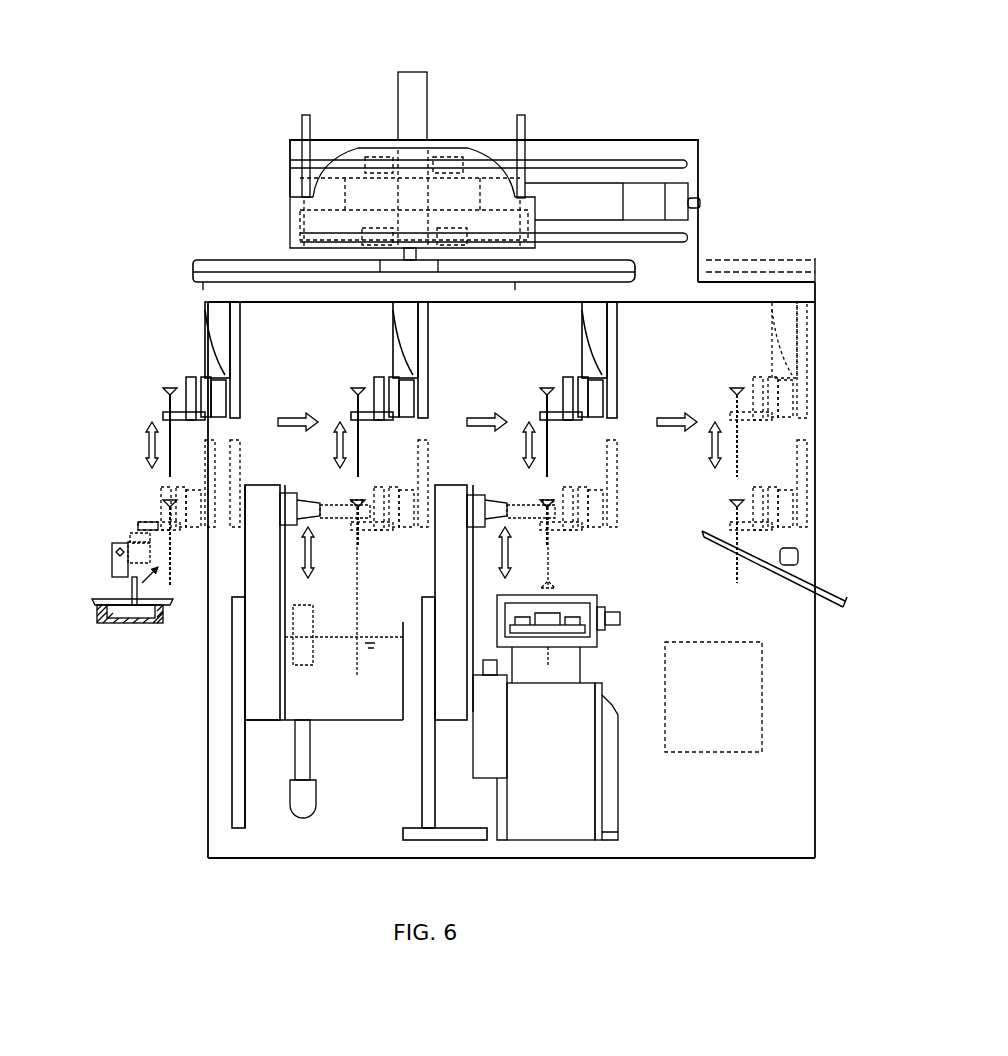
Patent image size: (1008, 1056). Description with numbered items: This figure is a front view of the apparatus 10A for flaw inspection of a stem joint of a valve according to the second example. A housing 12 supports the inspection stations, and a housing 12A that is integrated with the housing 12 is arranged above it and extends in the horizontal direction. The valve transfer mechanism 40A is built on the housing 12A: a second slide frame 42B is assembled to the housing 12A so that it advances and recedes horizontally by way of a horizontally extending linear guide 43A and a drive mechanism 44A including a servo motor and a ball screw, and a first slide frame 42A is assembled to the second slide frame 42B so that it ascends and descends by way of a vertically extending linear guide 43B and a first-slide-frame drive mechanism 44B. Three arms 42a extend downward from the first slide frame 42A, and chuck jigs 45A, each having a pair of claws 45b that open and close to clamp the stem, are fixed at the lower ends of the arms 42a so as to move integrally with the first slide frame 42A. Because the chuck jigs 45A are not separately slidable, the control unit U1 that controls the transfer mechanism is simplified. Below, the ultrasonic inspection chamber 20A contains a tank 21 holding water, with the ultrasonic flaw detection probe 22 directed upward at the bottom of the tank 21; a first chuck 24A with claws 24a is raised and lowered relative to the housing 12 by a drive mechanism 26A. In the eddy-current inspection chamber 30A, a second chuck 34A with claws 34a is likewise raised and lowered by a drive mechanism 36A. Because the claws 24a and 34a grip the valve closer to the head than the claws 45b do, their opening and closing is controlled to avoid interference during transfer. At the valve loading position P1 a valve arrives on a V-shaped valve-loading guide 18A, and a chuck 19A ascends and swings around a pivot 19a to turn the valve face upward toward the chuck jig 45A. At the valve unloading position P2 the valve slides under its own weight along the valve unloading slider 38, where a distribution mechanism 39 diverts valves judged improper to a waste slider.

The apparatus for flaw inspection 10A is at (208, 71).
The housing 12 is at (820, 328).
The housing 12A is at (568, 140).
The valve transfer mechanism 40A is at (607, 138).
The first-slide-frame drive mechanism 44B is at (417, 70).
The second slide frame 42B is at (300, 190).
The linear guide 43B is at (295, 188).
The linear guide 43A is at (378, 158).
The drive mechanism 44A is at (638, 181).
The first slide frame 42A is at (218, 257).
The arms 42a is at (240, 313).
The chuck jigs 45A is at (176, 372).
The claws 45b is at (162, 413).
The ultrasonic inspection chamber 20A is at (318, 452).
The eddy-current inspection chamber 30A is at (508, 452).
The first chuck 24A is at (328, 483).
The claws 24a is at (368, 528).
The second chuck 34A is at (517, 483).
The claws 34a is at (558, 528).
The drive mechanism 26A is at (257, 607).
The tank 21 is at (325, 665).
The ultrasonic flaw detection probe 22 is at (300, 722).
The drive mechanism 36A is at (455, 665).
The chuck 19A is at (138, 530).
The pivot 19a is at (117, 542).
The V-shaped valve-loading guide 18A is at (113, 632).
The valve loading position P1 is at (93, 593).
The valve unloading position P2 is at (717, 515).
The valve unloading slider 38 is at (778, 582).
The distribution mechanism 39 is at (800, 556).
The control unit U1 is at (765, 690).